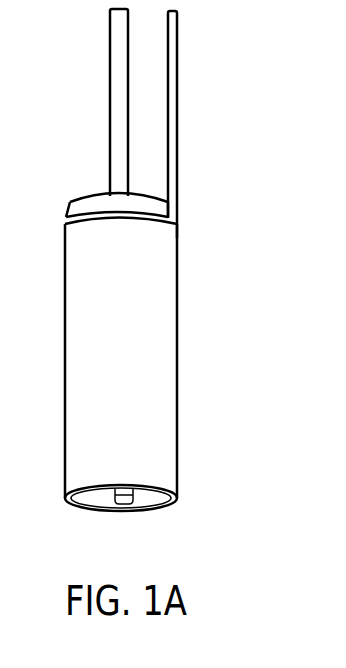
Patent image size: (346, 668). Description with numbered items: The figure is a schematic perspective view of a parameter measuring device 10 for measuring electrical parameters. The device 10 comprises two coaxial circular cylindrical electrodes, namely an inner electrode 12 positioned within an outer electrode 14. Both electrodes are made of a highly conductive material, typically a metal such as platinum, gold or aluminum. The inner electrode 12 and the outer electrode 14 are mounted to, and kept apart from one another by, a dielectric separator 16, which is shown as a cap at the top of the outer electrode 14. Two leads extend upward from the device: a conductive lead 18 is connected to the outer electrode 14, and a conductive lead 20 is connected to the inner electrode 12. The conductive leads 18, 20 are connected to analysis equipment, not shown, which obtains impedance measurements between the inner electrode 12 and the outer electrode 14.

The parameter measuring device 10 is at (252, 112).
The inner electrode 12 is at (115, 508).
The outer electrode 14 is at (177, 333).
The dielectric separator 16 is at (89, 196).
The conductive lead 18 is at (177, 110).
The conductive lead 20 is at (110, 93).